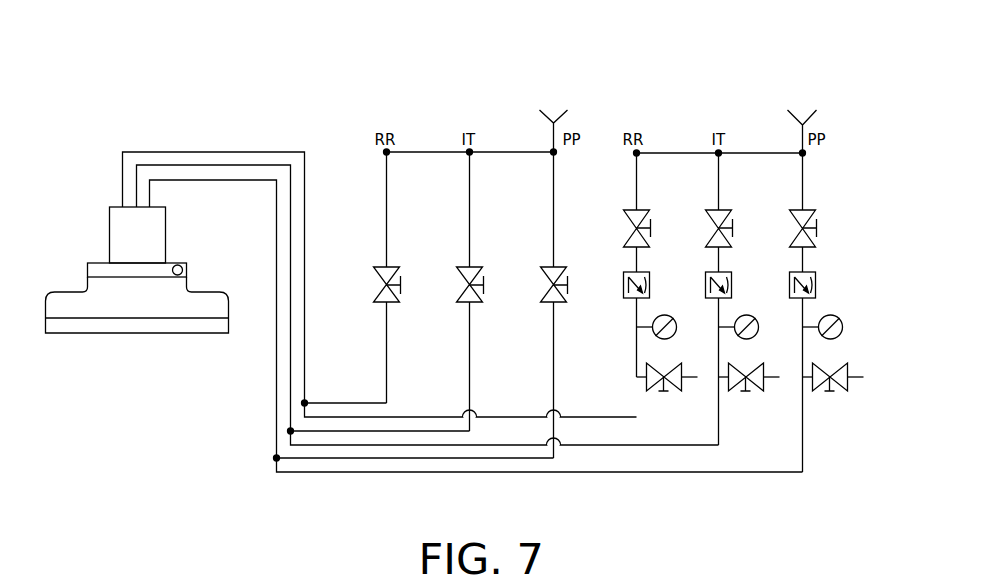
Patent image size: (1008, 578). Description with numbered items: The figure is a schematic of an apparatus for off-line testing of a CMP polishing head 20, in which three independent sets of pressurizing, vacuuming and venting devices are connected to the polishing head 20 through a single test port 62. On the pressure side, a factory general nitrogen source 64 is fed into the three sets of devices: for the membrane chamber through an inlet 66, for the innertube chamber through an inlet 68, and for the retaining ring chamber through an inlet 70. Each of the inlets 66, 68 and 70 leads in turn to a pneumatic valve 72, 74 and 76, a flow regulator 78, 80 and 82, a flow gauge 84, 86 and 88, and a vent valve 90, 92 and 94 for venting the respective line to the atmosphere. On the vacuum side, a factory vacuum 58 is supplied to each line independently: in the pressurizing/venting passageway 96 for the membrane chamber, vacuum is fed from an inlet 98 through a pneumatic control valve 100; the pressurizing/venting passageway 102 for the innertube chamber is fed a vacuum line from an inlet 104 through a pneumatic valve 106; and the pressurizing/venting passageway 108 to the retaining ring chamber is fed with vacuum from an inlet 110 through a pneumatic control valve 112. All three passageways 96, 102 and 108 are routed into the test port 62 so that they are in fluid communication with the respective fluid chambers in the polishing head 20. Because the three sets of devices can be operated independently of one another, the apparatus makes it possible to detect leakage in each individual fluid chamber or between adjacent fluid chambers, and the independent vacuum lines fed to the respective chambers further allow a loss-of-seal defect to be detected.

The polishing head 20 is at (66, 272).
The factory vacuum 58 is at (556, 78).
The test port 62 is at (110, 230).
The general nitrogen source 64 is at (819, 79).
The inlet 66 is at (807, 154).
The inlet 68 is at (723, 151).
The inlet 70 is at (633, 153).
The pneumatic valve 72 is at (820, 217).
The pneumatic valve 74 is at (740, 219).
The pneumatic valve 76 is at (653, 214).
The flow regulator 78 is at (818, 270).
The flow regulator 80 is at (733, 273).
The flow regulator 82 is at (650, 272).
The flow gauge 84 is at (838, 316).
The flow gauge 86 is at (752, 316).
The flow gauge 88 is at (670, 316).
The vent valve 90 is at (857, 367).
The vent valve 92 is at (770, 368).
The vent valve 94 is at (687, 368).
The pressurizing/venting passageway 96 is at (806, 458).
The inlet 98 is at (557, 156).
The pneumatic control valve 100 is at (573, 301).
The pressurizing/venting passageway 102 is at (722, 432).
The inlet 104 is at (473, 155).
The pneumatic valve 106 is at (487, 305).
The pressurizing/venting passageway 108 is at (640, 416).
The inlet 110 is at (391, 155).
The pneumatic control valve 112 is at (403, 303).